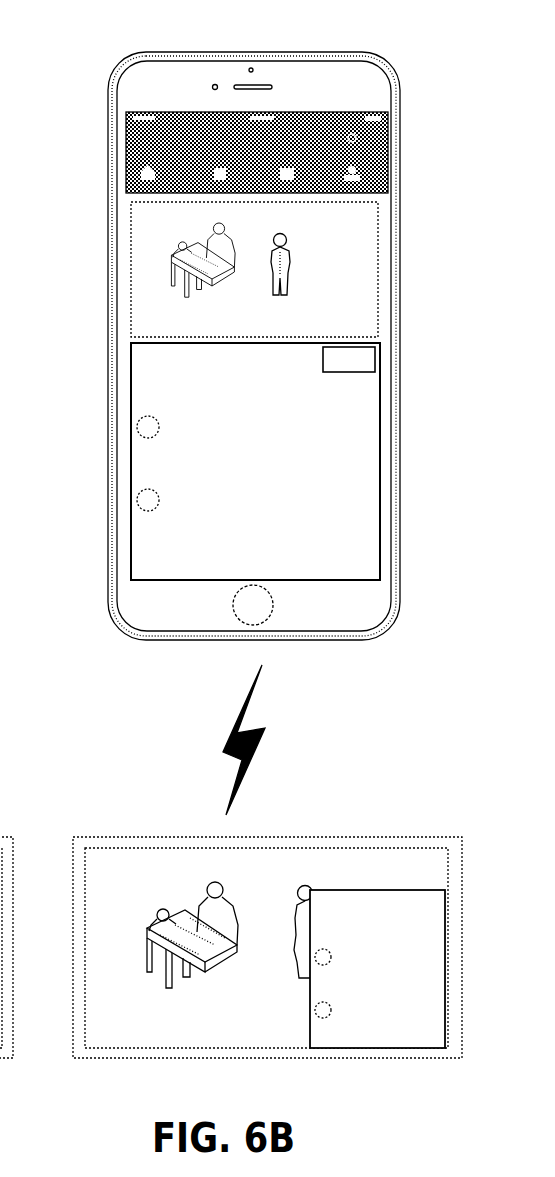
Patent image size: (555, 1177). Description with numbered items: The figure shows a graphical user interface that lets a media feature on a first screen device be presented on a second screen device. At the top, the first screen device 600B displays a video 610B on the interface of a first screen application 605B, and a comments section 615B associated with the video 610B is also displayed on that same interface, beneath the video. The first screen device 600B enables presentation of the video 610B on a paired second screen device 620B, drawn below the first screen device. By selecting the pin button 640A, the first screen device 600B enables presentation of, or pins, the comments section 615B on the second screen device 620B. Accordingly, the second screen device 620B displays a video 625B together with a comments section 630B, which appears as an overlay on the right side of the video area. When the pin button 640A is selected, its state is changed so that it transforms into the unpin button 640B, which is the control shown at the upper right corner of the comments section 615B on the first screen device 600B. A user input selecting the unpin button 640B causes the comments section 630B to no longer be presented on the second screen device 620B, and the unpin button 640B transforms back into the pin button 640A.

The first screen device 600B is at (238, 326).
The first screen application 605B is at (132, 130).
The video 610B is at (142, 224).
The comments section 615B is at (132, 370).
The pin button 640A is at (14, 286).
The unpin button 640B is at (378, 352).
The second screen device 620B is at (252, 918).
The video 625B is at (260, 866).
The comments section 630B is at (398, 888).